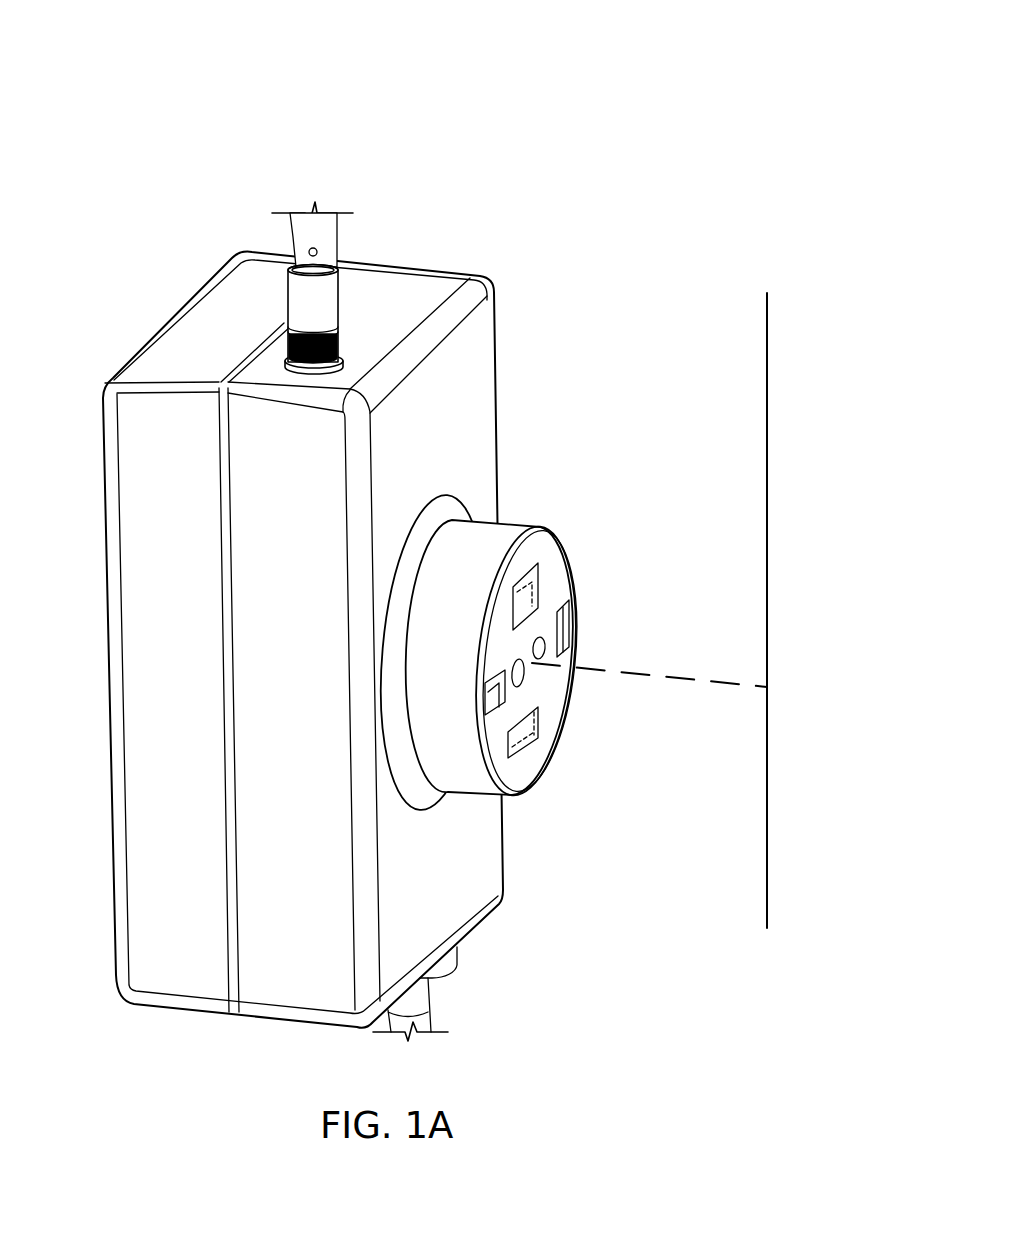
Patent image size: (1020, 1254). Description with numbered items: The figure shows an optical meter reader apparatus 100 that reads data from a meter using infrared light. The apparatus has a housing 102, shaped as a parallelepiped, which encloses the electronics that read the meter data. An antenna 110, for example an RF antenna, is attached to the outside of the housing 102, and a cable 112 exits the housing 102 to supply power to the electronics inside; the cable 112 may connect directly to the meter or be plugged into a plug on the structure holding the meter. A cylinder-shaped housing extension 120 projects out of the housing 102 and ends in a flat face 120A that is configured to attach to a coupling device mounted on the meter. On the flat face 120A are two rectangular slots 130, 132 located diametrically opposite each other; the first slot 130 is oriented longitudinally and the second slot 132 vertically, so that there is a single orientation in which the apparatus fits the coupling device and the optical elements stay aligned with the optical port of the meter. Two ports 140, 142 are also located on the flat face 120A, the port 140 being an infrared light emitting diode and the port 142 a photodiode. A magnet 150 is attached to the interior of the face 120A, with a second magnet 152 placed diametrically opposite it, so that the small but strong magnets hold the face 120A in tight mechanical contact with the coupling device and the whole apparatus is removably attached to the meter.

The optical meter reader apparatus 100 is at (724, 60).
The housing 102 is at (131, 544).
The antenna 110 is at (330, 292).
The cable 112 is at (430, 1000).
The housing extension 120 is at (516, 520).
The flat face 120A is at (533, 783).
The first slot 130 is at (502, 707).
The second slot 132 is at (563, 622).
The port 140 is at (522, 680).
The port 142 is at (537, 665).
The magnet 150 is at (536, 585).
The second magnet 152 is at (533, 752).